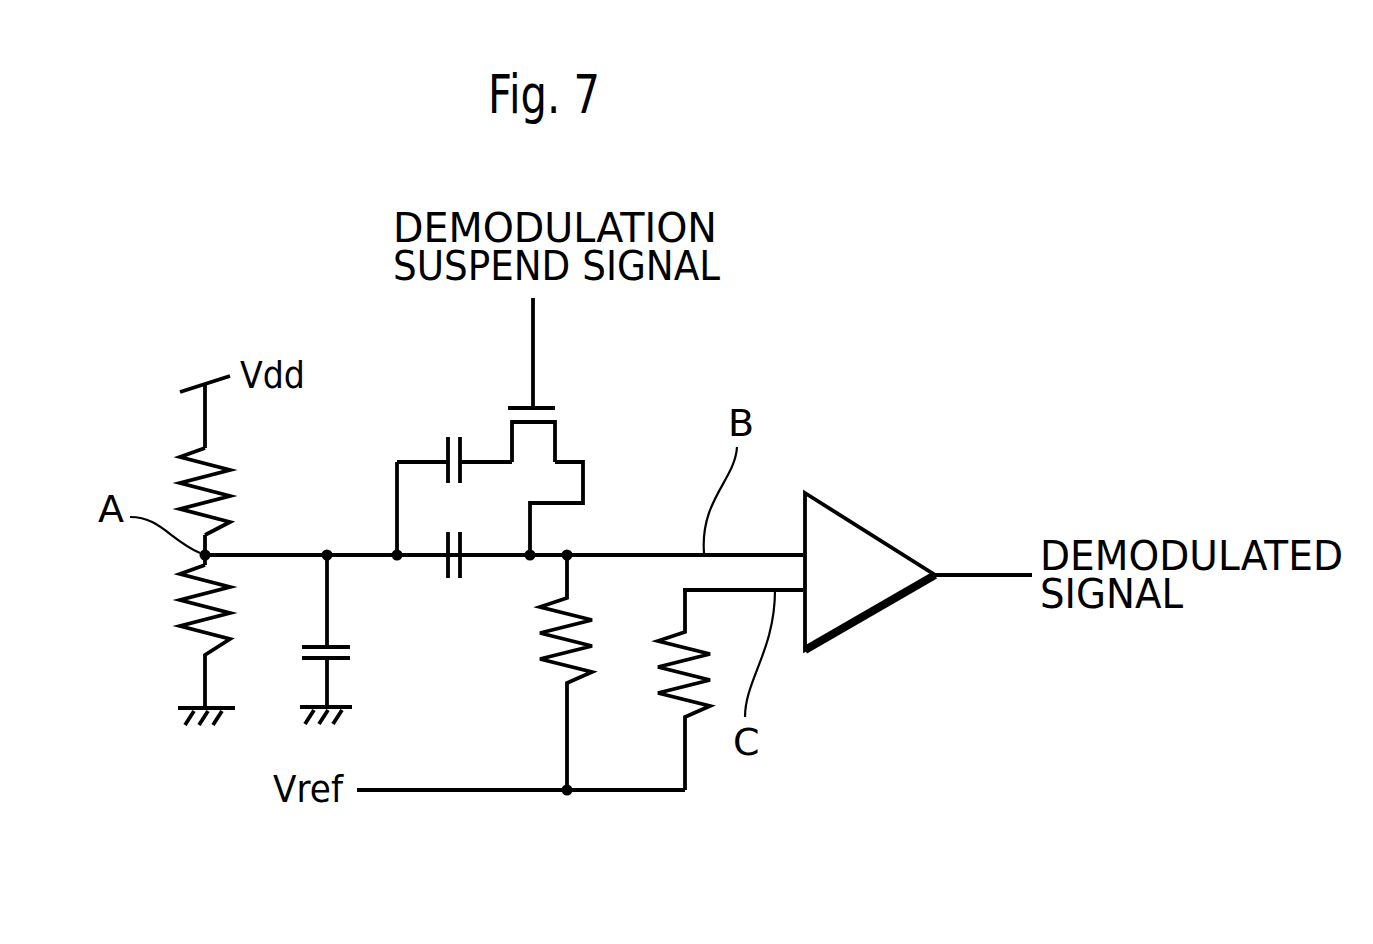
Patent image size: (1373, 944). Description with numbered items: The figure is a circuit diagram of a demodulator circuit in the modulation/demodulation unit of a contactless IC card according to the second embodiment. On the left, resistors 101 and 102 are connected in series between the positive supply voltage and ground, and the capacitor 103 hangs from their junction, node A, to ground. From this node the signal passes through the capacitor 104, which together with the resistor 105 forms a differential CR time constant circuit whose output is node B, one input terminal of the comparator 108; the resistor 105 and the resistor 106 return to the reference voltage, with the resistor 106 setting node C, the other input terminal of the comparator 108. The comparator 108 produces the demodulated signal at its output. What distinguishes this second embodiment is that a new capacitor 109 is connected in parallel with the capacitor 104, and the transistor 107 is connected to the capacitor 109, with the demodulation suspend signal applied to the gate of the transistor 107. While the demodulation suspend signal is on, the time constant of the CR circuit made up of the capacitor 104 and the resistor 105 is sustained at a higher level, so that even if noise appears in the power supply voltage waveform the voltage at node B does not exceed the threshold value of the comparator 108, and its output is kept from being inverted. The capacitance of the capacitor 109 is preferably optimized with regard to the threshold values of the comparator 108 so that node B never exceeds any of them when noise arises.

The resistor 101 is at (215, 468).
The resistor 102 is at (195, 645).
The capacitor 103 is at (340, 660).
The capacitor 104 is at (447, 565).
The resistor 105 is at (550, 638).
The resistor 106 is at (668, 672).
The transistor 107 is at (558, 432).
The comparator 108 is at (862, 528).
The capacitor 109 is at (445, 445).